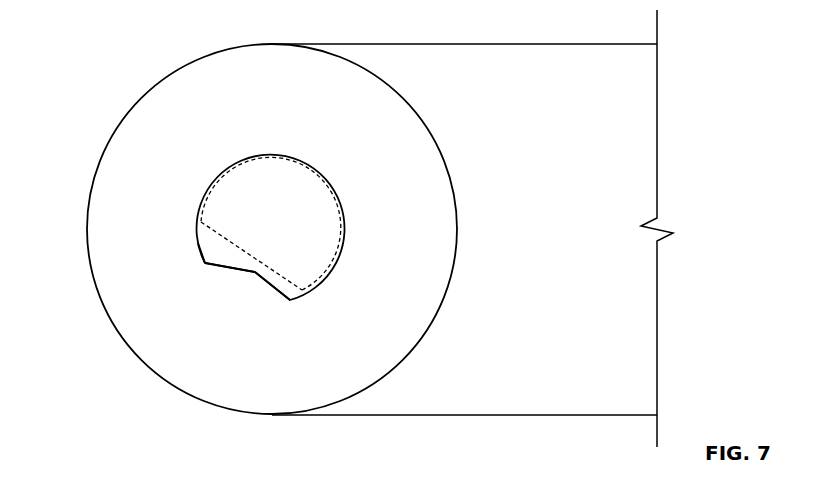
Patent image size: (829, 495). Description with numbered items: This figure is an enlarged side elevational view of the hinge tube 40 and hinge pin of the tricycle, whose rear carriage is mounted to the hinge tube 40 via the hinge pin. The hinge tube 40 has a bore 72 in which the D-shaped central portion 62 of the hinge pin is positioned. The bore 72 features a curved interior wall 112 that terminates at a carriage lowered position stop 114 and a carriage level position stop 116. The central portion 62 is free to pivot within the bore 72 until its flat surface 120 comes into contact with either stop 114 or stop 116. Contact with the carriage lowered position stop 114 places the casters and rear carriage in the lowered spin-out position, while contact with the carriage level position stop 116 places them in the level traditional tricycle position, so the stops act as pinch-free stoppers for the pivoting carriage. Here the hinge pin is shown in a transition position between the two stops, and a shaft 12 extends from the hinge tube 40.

The shaft 12 is at (577, 200).
The hinge tube 40 is at (429, 327).
The D-shaped central portion 62 is at (323, 178).
The bore 72 is at (182, 156).
The curved interior wall 112 is at (197, 245).
The carriage lowered position stop 114 is at (231, 269).
The carriage level position stop 116 is at (276, 290).
The flat surface 120 is at (198, 233).